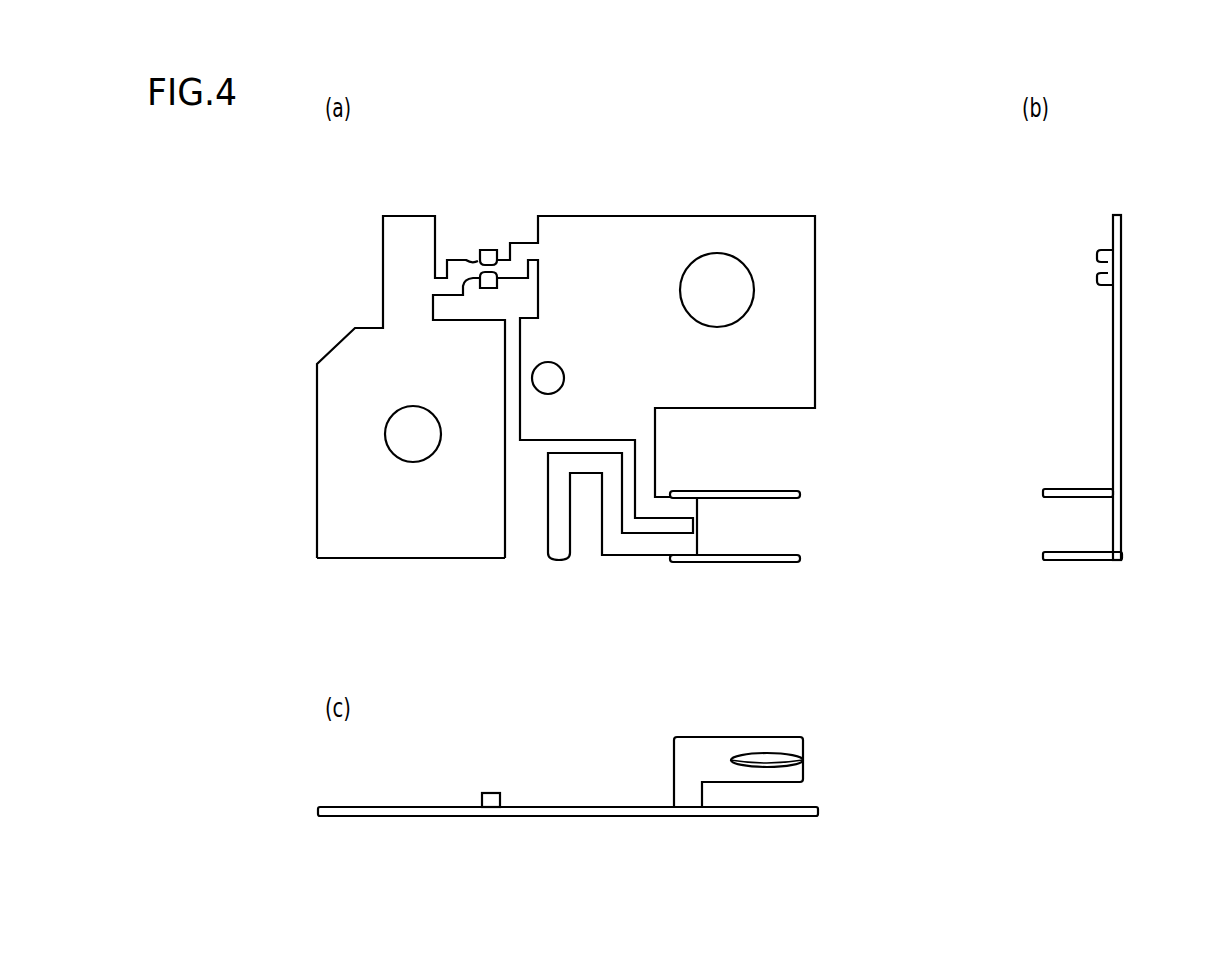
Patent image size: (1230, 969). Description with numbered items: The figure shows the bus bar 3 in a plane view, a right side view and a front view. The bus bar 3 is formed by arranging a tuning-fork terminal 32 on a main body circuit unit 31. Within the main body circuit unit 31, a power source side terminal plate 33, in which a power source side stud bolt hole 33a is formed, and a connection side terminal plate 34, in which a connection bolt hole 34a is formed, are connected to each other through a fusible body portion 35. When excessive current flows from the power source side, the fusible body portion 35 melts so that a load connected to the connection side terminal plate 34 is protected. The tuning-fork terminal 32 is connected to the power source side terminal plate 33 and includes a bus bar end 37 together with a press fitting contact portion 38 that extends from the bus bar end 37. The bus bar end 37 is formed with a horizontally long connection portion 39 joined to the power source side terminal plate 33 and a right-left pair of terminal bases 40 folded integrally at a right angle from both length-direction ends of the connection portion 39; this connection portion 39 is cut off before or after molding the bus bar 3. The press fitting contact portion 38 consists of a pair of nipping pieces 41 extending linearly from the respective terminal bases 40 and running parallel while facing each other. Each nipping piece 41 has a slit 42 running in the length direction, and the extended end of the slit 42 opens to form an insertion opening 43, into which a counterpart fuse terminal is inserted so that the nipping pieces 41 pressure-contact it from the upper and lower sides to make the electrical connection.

The bus bar 3 is at (713, 173).
The main body circuit unit 31 is at (645, 208).
The tuning-fork terminal 32 is at (730, 572).
The power source side terminal plate 33 is at (815, 268).
The power source side stud bolt hole 33a is at (720, 280).
The connection side terminal plate 34 is at (317, 407).
The connection bolt hole 34a is at (402, 438).
The fusible body portion 35 is at (487, 248).
The bus bar end 37 is at (700, 508).
The press fitting contact portion 38 is at (808, 518).
The connection portion 39 is at (693, 525).
The terminal base 40 is at (688, 788).
The nipping piece 41 is at (770, 492).
The slit 42 is at (762, 758).
The insertion opening 43 is at (803, 757).